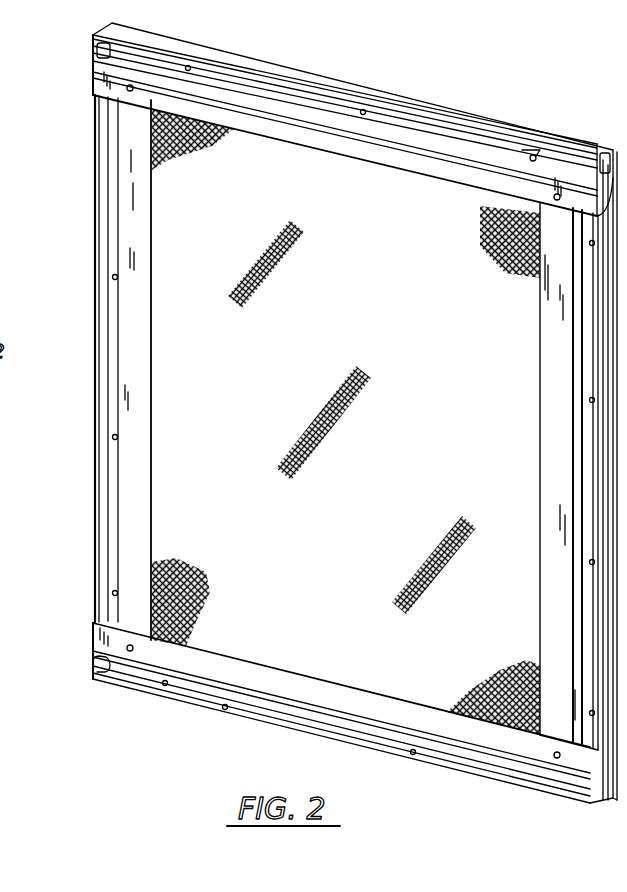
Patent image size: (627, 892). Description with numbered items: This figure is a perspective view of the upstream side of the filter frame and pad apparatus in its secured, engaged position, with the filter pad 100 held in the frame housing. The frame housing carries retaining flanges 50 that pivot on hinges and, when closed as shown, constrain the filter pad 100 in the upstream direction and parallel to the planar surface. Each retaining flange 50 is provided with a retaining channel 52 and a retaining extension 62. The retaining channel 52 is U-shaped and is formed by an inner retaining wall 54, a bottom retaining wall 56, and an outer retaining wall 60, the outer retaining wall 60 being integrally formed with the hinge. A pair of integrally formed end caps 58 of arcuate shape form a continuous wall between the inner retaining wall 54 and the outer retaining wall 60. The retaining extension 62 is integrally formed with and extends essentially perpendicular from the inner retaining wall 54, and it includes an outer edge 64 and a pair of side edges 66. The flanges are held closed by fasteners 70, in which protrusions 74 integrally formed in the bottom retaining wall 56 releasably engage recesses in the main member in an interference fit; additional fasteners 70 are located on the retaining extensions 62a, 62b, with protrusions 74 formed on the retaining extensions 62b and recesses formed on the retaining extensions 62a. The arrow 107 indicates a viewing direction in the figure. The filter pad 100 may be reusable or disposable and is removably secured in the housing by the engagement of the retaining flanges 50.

The retaining flange 50 is at (253, 87).
The retaining channel 52 is at (307, 91).
The inner retaining wall 54 is at (422, 138).
The bottom retaining wall 56 is at (383, 123).
The end cap 58 is at (90, 673).
The outer retaining wall 60 is at (223, 707).
The retaining extension 62 is at (133, 192).
The retaining extension 62a is at (130, 163).
The retaining extension 62b is at (403, 162).
The outer edge 64 is at (157, 313).
The side edge 66 is at (90, 78).
The fastener 70 is at (518, 153).
The protrusion 74 is at (563, 148).
The filter pad 100 is at (256, 249).
The direction arrow 107 is at (563, 52).